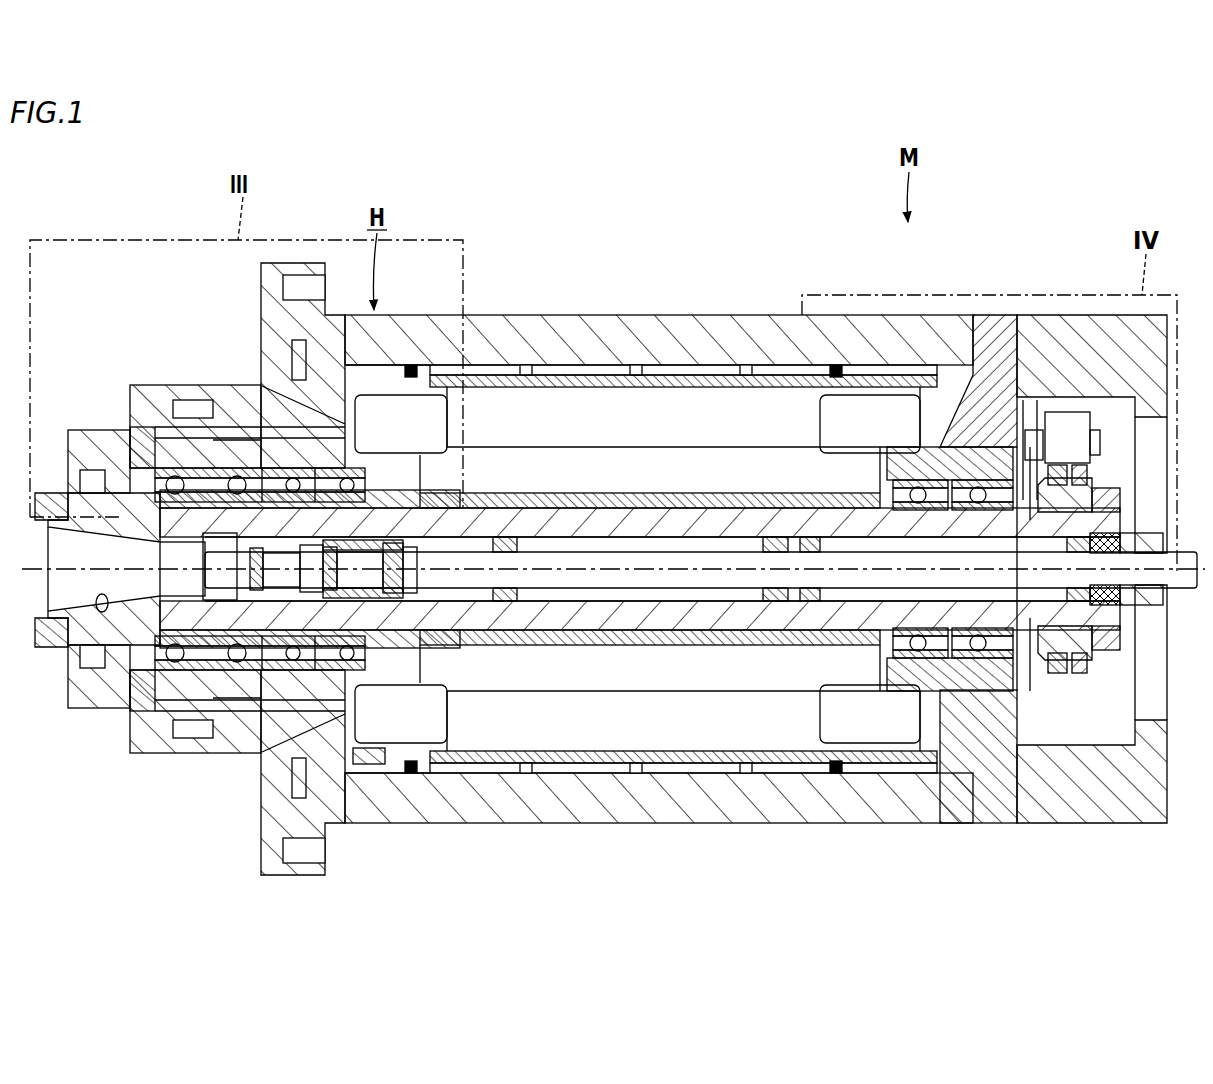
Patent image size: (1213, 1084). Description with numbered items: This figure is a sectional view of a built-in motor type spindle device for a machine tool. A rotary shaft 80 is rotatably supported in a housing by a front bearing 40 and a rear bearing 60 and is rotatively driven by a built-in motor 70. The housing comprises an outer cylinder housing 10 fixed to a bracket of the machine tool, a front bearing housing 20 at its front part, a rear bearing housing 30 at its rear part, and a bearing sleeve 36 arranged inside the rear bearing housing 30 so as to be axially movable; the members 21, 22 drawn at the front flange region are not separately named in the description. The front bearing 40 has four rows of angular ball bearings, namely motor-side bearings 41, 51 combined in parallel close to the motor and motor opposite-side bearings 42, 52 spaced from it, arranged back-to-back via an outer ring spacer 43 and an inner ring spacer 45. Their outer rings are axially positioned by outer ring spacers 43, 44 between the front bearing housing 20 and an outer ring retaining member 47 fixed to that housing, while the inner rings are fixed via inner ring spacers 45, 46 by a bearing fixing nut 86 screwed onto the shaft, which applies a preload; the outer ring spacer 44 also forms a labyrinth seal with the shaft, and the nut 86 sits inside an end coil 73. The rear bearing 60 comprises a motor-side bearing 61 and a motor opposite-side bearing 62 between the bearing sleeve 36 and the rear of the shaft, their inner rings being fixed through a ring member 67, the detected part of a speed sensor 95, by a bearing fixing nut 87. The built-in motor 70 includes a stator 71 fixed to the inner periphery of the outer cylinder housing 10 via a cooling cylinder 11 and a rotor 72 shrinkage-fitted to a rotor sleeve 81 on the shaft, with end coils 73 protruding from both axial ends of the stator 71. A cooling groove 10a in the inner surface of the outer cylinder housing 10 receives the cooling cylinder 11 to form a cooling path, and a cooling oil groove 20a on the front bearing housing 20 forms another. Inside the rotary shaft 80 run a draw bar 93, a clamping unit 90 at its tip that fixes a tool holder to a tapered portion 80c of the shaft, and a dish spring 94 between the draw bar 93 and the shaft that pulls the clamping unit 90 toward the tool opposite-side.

The outer cylinder housing 10 is at (735, 313).
The cooling groove 10a is at (778, 370).
The cooling cylinder 11 is at (485, 372).
The front bearing housing 20 is at (152, 383).
The cooling oil groove 20a is at (215, 438).
The flange bolt 21 is at (300, 405).
The front flange 22 is at (338, 395).
The rear bearing housing 30 is at (990, 312).
The bearing sleeve 36 is at (910, 680).
The front bearing 40 is at (237, 663).
The motor-side bearing 41 is at (343, 668).
The motor opposite-side bearing 42 is at (170, 683).
The outer ring spacer 43 is at (315, 485).
The outer ring spacer 44 is at (180, 500).
The inner ring spacer 45 is at (265, 590).
The inner ring spacer 46 is at (367, 766).
The outer ring retaining member 47 is at (113, 428).
The motor-side bearing 51 is at (288, 672).
The motor opposite-side bearing 52 is at (235, 683).
The rear bearing 60 is at (988, 433).
The motor-side bearing 61 is at (918, 473).
The motor opposite-side bearing 62 is at (975, 472).
The ring member 67 is at (1100, 643).
The built-in motor 70 is at (678, 486).
The stator 71 is at (597, 412).
The rotor 72 is at (660, 475).
The end coil 73 is at (425, 410).
The rotary shaft 80 is at (643, 617).
The tapered portion 80c is at (100, 612).
The rotor sleeve 81 is at (537, 640).
The bearing fixing nut 86 is at (383, 650).
The bearing fixing nut 87 is at (1120, 497).
The clamping unit 90 is at (125, 478).
The draw bar 93 is at (700, 580).
The dish spring 94 is at (823, 600).
The speed sensor 95 is at (1097, 422).